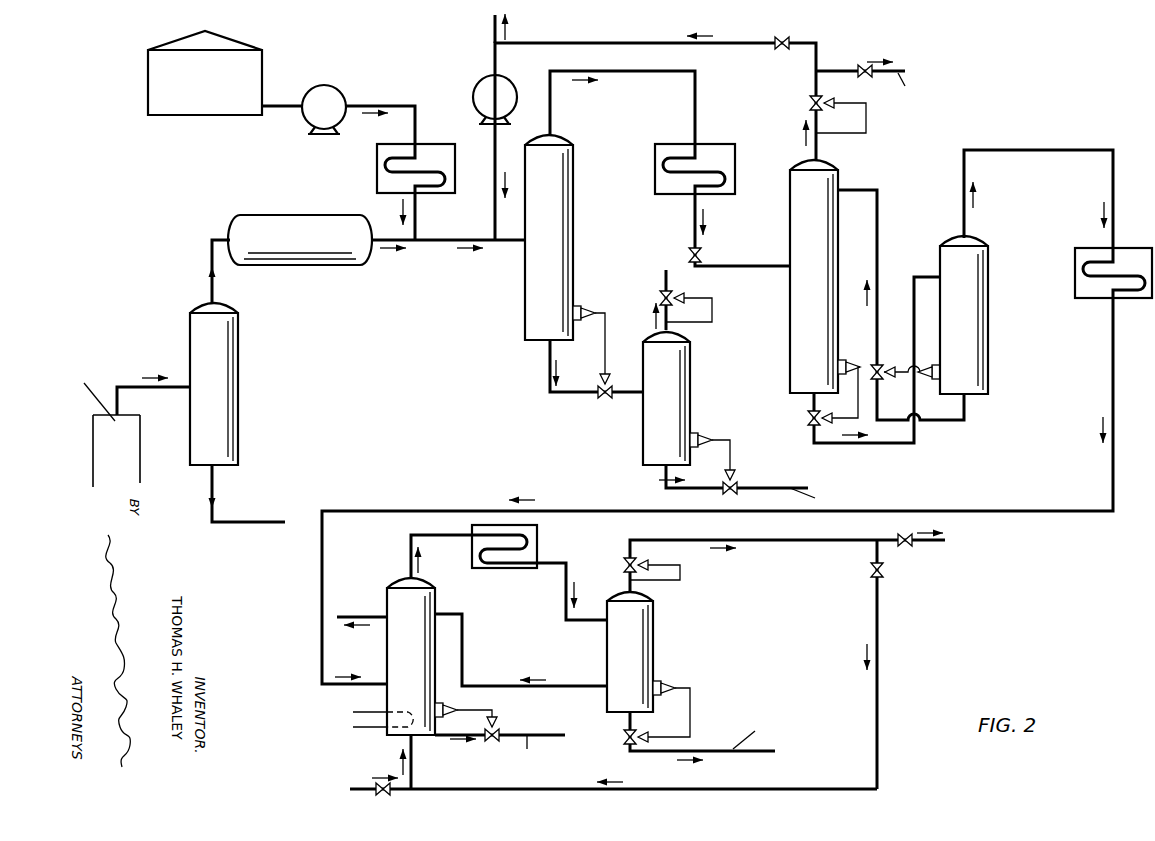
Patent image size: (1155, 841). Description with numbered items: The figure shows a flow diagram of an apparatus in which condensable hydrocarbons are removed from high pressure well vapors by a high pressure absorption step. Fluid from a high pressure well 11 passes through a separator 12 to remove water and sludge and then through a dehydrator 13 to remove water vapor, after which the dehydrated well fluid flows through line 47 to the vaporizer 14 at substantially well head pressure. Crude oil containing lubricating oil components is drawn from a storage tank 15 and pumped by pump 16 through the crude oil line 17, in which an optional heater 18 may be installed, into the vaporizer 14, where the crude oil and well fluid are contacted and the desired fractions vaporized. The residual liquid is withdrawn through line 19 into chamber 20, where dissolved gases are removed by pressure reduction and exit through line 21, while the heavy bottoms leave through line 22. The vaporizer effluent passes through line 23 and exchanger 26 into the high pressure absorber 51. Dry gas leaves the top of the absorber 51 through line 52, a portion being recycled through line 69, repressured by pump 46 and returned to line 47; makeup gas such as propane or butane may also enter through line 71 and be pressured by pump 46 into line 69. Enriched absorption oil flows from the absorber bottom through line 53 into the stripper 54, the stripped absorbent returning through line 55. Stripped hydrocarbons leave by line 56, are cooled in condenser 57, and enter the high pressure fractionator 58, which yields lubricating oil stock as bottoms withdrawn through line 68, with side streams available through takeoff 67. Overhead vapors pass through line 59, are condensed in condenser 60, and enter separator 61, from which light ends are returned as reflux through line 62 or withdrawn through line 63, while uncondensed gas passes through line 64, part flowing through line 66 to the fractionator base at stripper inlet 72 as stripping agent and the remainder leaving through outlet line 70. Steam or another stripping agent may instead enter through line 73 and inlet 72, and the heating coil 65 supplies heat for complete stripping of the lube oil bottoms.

The high pressure well 11 is at (105, 457).
The separator 12 is at (205, 335).
The dehydrator 13 is at (298, 222).
The vaporizer 14 is at (565, 170).
The storage tank 15 is at (153, 94).
The pump 16 is at (331, 100).
The crude oil line 17 is at (282, 108).
The heater 18 is at (378, 166).
The line 19 is at (548, 376).
The chamber 20 is at (685, 369).
The line 21 is at (663, 284).
The line 22 is at (758, 486).
The line 23 is at (626, 75).
The exchanger 26 is at (661, 153).
The pump 46 is at (482, 92).
The line 47 is at (516, 252).
The high pressure absorber 51 is at (800, 184).
The line 52 is at (840, 70).
The line 53 is at (893, 447).
The stripper 54 is at (983, 258).
The line 55 is at (877, 232).
The line 56 is at (1047, 150).
The condenser 57 is at (1082, 294).
The high pressure fractionator 58 is at (425, 594).
The line 59 is at (407, 535).
The condenser 60 is at (530, 535).
The separator 61 is at (643, 641).
The line 62 is at (497, 684).
The line 63 is at (705, 748).
The line 64 is at (773, 545).
The heating coil 65 is at (362, 712).
The line 66 is at (881, 633).
The takeoff 67 is at (343, 615).
The line 68 is at (540, 735).
The line 69 is at (493, 143).
The outlet line 70 is at (918, 543).
The line 71 is at (490, 30).
The stripper inlet 72 is at (413, 762).
The line 73 is at (360, 787).